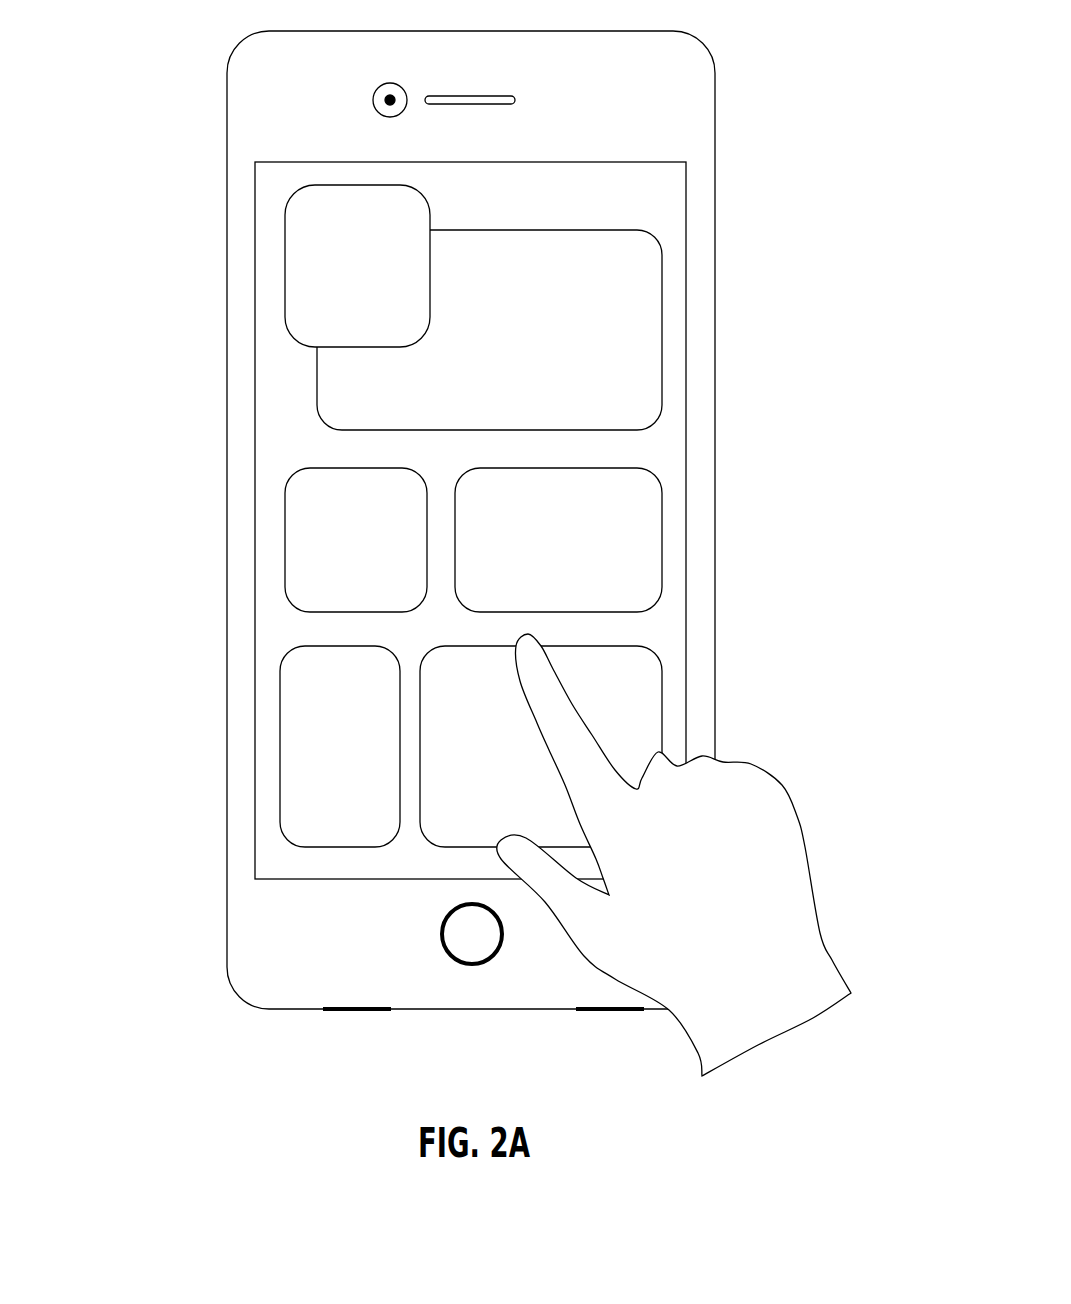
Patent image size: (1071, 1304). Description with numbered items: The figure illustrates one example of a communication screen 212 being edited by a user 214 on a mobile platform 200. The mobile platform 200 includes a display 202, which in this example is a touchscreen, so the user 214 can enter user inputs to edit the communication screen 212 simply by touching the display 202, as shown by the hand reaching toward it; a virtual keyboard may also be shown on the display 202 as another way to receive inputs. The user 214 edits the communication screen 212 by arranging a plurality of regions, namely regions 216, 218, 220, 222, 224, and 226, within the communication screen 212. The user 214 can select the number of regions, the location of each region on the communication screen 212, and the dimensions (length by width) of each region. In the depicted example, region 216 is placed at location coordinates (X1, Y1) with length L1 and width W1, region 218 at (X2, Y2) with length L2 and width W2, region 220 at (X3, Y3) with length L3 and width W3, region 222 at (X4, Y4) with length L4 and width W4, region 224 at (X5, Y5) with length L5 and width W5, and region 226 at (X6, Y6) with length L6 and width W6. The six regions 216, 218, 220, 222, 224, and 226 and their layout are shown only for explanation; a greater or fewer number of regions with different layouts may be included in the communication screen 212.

The mobile platform 200 is at (712, 55).
The display 202 is at (687, 222).
The communication screen 212 is at (652, 185).
The user 214 is at (805, 847).
The region 216 is at (110, 168).
The region 218 is at (843, 213).
The region 220 is at (92, 427).
The region 222 is at (850, 390).
The region 224 is at (847, 583).
The region 226 is at (110, 618).